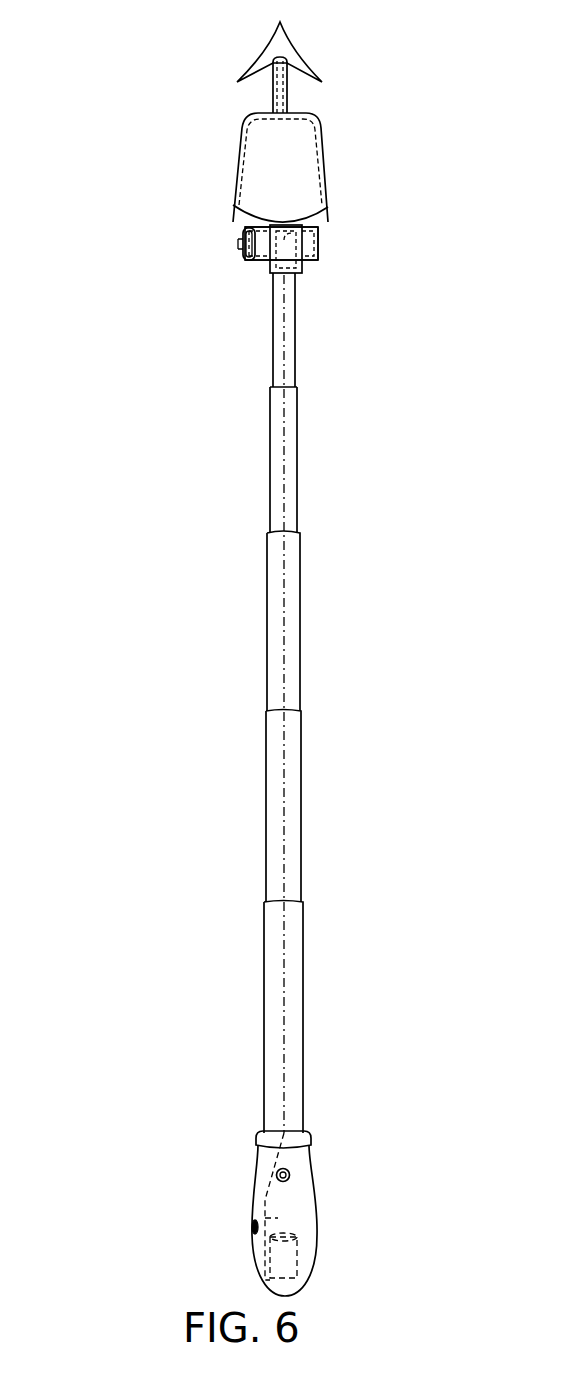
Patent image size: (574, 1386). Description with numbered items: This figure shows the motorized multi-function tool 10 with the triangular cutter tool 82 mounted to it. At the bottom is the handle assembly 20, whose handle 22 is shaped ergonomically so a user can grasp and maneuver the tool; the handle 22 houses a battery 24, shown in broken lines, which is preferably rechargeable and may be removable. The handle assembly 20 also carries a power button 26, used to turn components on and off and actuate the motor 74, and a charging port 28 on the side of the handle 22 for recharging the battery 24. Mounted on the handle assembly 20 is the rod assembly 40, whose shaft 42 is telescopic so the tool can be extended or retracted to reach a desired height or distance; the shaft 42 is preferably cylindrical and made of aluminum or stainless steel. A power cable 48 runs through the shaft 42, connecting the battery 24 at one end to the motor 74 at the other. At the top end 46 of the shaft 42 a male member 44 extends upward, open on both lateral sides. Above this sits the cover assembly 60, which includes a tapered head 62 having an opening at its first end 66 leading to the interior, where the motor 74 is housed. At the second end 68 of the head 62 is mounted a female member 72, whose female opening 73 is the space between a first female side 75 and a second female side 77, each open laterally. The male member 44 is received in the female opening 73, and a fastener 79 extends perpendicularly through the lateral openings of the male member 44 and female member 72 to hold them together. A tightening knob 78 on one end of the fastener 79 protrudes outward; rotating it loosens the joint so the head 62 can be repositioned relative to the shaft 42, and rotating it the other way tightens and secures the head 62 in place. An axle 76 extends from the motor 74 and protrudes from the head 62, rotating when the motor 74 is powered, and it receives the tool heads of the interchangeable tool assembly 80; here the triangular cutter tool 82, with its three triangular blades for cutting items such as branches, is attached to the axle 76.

The motorized multi-function tool 10 is at (150, 105).
The handle assembly 20 is at (313, 1190).
The handle 22 is at (300, 1182).
The battery 24 is at (285, 1265).
The power button 26 is at (277, 1175).
The charging port 28 is at (250, 1228).
The rod assembly 40 is at (302, 937).
The shaft 42 is at (275, 638).
The male member 44 is at (302, 270).
The top end 46 is at (273, 287).
The power cable 48 is at (285, 1045).
The cover assembly 60 is at (232, 190).
The head 62 is at (240, 147).
The first end 66 is at (300, 112).
The second end 68 is at (262, 261).
The female member 72 is at (318, 252).
The female opening 73 is at (260, 223).
The motor 74 is at (288, 162).
The first female side 75 is at (270, 267).
The axle 76 is at (273, 102).
The second female side 77 is at (318, 259).
The tightening knob 78 is at (245, 245).
The fastener 79 is at (312, 240).
The interchangeable tool assembly 80 is at (268, 45).
The triangular cutter tool 82 is at (293, 54).